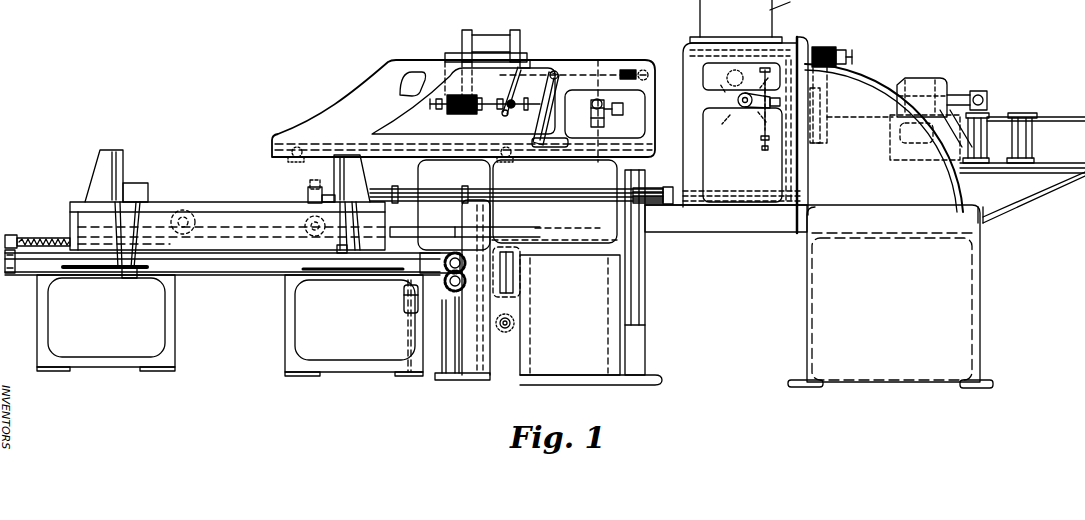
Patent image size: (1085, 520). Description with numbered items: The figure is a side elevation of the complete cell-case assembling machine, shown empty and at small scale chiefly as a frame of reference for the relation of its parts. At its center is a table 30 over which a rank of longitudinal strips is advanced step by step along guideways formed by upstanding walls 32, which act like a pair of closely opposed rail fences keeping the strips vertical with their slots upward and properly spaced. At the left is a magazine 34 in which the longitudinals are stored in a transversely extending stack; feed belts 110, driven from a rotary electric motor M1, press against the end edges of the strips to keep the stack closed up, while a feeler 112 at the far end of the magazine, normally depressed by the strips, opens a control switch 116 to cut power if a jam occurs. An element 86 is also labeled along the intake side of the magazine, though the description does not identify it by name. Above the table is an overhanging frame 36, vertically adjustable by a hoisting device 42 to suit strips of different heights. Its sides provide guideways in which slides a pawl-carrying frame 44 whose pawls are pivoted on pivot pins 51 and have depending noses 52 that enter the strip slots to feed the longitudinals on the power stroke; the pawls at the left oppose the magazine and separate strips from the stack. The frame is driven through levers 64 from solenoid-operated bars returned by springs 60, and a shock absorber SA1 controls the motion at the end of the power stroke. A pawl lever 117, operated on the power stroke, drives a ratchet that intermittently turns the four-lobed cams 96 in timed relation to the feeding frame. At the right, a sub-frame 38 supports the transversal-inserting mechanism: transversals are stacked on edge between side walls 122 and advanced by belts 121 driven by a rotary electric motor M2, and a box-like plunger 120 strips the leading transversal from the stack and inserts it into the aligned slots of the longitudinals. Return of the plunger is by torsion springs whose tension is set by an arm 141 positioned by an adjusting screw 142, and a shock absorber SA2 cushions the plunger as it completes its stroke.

The table 30 is at (742, 234).
The upstanding walls 32 is at (645, 187).
The magazine 34 is at (65, 148).
The overhanging frame 36 is at (378, 52).
The sub-frame 38 is at (682, 5).
The hoisting device 42 is at (520, 283).
The pawl-carrying frame 44 is at (360, 145).
The pivot pins 51 is at (518, 45).
The depending noses 52 is at (290, 155).
The springs 60 is at (620, 68).
The levers 64 is at (537, 118).
The rack rail 86 is at (58, 238).
The cams 96 is at (305, 232).
The feed belts 110 is at (125, 172).
The feeler 112 is at (308, 193).
The control switch 116 is at (322, 170).
The pawl lever 117 is at (600, 97).
The plunger 120 is at (820, 103).
The belts 121 is at (993, 127).
The side walls 122 is at (847, 117).
The arm 141 is at (742, 107).
The adjusting screw 142 is at (766, 134).
The shock absorber SA1 is at (460, 113).
The shock absorber SA2 is at (824, 48).
The rotary electric motor M1 is at (405, 292).
The rotary electric motor M2 is at (930, 78).